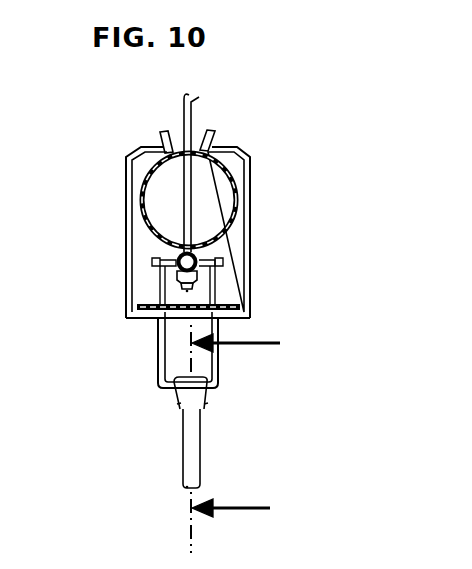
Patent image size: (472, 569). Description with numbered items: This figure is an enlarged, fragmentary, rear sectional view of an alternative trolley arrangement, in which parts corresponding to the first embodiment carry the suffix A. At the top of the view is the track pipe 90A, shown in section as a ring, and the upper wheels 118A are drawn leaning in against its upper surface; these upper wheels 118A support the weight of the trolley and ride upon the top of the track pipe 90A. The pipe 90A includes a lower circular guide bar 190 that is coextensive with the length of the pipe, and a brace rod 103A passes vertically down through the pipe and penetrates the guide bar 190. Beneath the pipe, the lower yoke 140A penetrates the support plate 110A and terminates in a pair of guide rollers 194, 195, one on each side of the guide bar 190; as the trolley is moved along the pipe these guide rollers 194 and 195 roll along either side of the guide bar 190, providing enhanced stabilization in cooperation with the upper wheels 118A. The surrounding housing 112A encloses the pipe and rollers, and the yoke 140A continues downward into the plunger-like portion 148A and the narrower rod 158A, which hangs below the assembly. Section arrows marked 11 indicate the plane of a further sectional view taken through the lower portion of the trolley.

The section line 11- 11 is at (248, 439).
The track pipe 90A is at (232, 176).
The brace rod 103A is at (192, 112).
The support plate 110A is at (228, 306).
The housing 112A is at (125, 181).
The upper wheels 118A is at (165, 133).
The lower yoke 140A is at (162, 345).
The plunger 148A is at (183, 393).
The rod 158A is at (187, 448).
The guide bar 190 is at (198, 254).
The guide roller 194 is at (153, 260).
The guide roller 195 is at (200, 266).